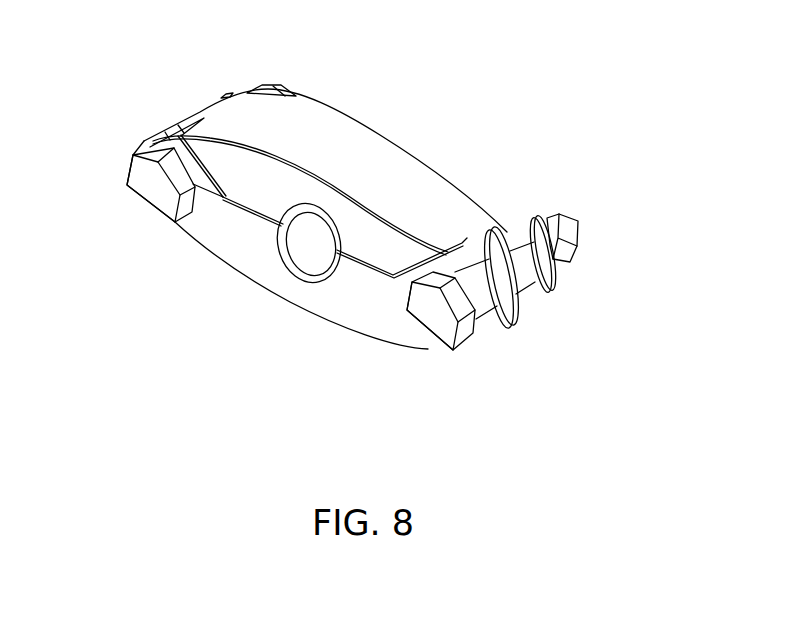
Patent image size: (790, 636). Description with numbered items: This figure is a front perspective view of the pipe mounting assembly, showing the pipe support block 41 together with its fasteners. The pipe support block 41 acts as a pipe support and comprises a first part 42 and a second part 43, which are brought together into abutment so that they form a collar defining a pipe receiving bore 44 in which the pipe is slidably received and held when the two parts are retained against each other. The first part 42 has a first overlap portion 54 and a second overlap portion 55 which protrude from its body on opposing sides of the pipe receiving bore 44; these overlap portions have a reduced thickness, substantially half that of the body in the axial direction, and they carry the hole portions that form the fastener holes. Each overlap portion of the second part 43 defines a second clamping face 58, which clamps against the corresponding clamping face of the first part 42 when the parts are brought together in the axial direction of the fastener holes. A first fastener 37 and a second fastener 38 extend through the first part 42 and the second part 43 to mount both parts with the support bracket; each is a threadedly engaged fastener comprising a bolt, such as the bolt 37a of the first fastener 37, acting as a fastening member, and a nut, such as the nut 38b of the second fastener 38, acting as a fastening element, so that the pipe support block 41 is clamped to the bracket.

The pipe support block 41 is at (607, 79).
The first part 42 is at (400, 185).
The second part 43 is at (367, 327).
The pipe receiving bore 44 is at (313, 248).
The first overlap portion 54 is at (207, 108).
The first fastener 37 is at (162, 197).
The bolt 37a is at (140, 178).
The second fastener 38 is at (440, 330).
The nut 38b is at (570, 237).
The second overlap portion 55 is at (497, 327).
The second clamping face 58 is at (487, 258).